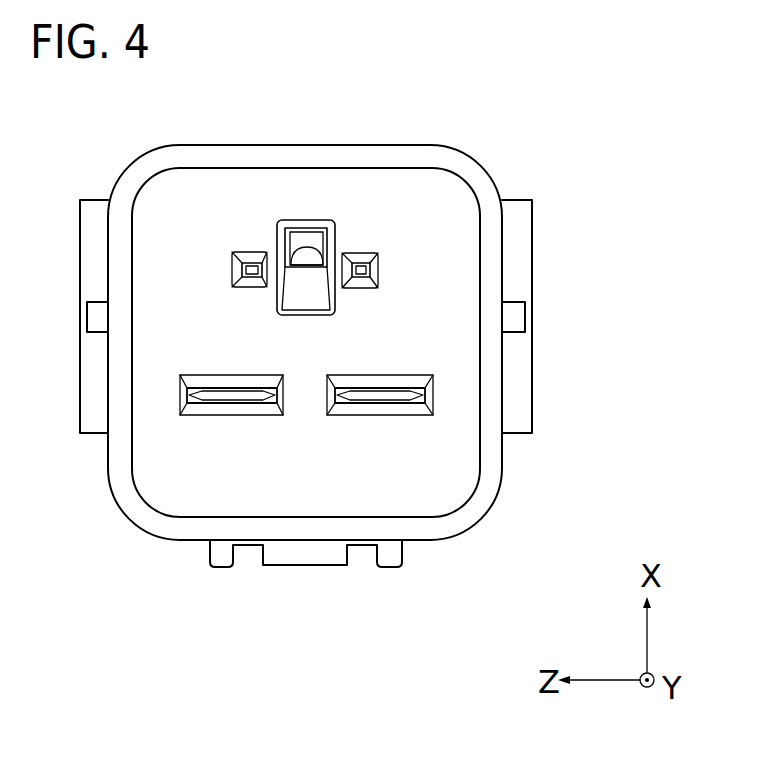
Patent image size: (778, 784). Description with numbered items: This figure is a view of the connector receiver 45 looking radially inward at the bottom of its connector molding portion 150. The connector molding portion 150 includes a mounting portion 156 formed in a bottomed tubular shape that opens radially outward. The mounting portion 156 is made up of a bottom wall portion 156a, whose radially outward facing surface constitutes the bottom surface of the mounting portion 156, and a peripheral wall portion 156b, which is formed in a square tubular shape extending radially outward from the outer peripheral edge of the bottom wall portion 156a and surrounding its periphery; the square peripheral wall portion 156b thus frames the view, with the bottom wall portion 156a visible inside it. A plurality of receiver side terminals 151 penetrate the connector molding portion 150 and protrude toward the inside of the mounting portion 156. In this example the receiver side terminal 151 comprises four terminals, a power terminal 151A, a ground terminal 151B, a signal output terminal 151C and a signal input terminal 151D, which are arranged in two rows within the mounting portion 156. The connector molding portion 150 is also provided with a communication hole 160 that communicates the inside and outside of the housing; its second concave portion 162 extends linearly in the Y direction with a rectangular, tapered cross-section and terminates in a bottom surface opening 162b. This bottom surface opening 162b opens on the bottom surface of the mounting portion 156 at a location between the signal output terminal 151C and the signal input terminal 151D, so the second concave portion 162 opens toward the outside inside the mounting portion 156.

The connector receiver 45 is at (490, 170).
The connector molding portion 150 is at (517, 267).
The mounting portion 156 is at (350, 362).
The bottom wall portion 156a is at (437, 448).
The peripheral wall portion 156b is at (473, 508).
The receiver side terminal 151 is at (317, 361).
The power terminal 151A is at (218, 402).
The ground terminal 151B is at (387, 398).
The signal output terminal 151C is at (250, 253).
The signal input terminal 151D is at (358, 253).
The communication hole 160 is at (311, 203).
The second concave portion 162 is at (280, 292).
The bottom surface opening 162b is at (312, 307).